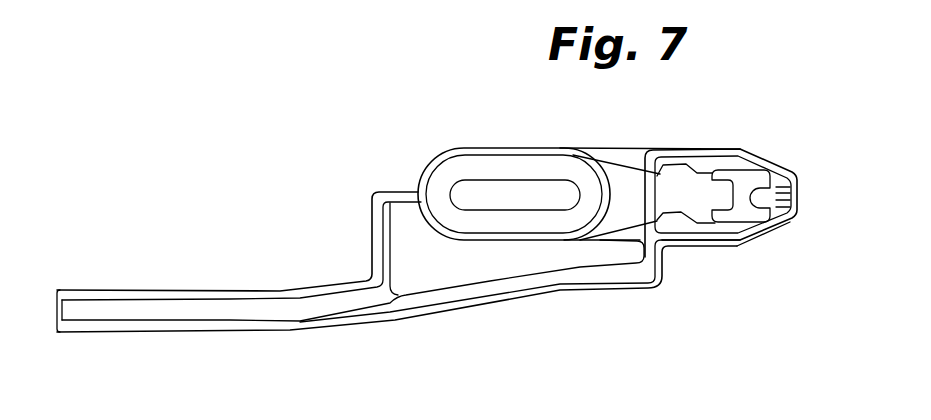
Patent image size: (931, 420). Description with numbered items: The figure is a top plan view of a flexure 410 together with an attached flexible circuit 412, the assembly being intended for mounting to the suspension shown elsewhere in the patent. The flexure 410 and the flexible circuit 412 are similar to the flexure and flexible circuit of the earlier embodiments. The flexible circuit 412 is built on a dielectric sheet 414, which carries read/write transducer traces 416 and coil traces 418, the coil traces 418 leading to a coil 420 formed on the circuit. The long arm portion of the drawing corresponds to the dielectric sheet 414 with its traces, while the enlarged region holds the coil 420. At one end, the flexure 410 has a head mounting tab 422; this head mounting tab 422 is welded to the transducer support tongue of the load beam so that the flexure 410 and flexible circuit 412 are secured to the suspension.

The flexure 410 is at (623, 163).
The flexible circuit 412 is at (608, 148).
The dielectric sheet 414 is at (160, 307).
The read/write transducer traces 416 is at (262, 331).
The coil traces 418 is at (260, 294).
The coil 420 is at (481, 168).
The head mounting tab 422 is at (753, 200).